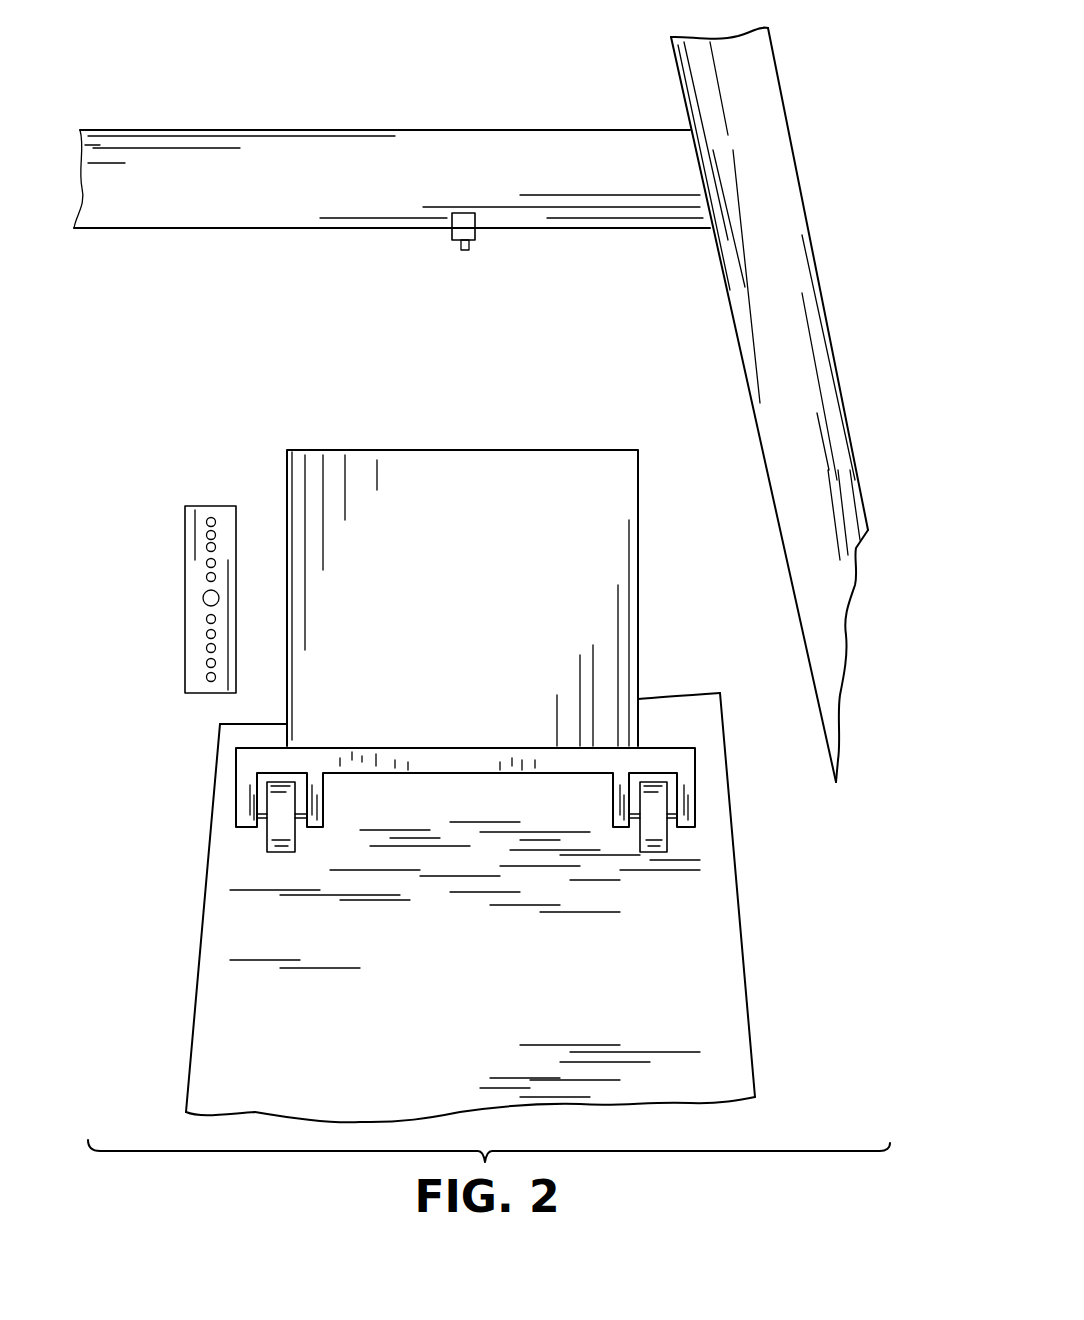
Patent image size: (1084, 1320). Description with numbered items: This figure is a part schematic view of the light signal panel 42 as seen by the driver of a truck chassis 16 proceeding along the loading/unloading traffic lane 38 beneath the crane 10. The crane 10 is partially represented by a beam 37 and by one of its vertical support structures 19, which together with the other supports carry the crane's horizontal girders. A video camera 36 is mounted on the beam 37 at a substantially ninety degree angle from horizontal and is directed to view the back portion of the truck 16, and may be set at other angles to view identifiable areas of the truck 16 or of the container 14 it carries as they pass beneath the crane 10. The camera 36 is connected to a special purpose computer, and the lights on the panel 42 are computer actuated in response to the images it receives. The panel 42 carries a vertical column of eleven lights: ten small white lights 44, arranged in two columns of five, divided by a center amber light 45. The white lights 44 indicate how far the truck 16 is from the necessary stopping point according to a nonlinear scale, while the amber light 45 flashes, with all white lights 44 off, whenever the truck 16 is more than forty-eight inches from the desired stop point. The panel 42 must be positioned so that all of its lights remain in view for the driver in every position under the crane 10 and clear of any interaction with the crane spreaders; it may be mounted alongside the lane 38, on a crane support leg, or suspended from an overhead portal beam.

The crane 10 is at (321, 84).
The beam 37 is at (213, 230).
The video camera 36 is at (475, 232).
The vertical support structure 19 is at (813, 257).
The container 14 is at (482, 450).
The light signal panel 42 is at (211, 506).
The small white lights 44 is at (205, 547).
The center amber light 45 is at (203, 598).
The truck chassis 16 is at (236, 782).
The loading/unloading traffic lane 38 is at (700, 940).